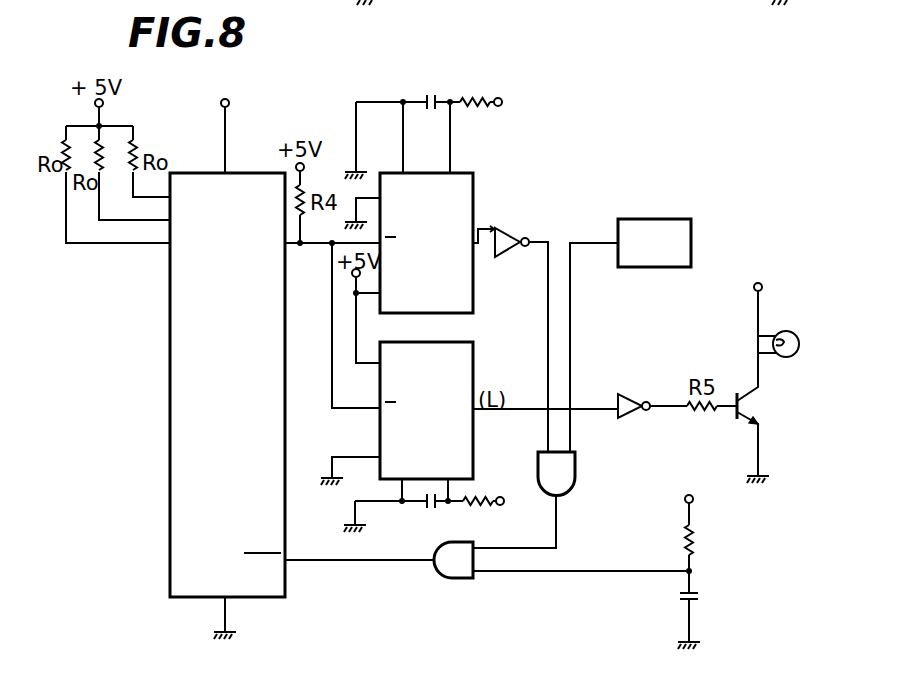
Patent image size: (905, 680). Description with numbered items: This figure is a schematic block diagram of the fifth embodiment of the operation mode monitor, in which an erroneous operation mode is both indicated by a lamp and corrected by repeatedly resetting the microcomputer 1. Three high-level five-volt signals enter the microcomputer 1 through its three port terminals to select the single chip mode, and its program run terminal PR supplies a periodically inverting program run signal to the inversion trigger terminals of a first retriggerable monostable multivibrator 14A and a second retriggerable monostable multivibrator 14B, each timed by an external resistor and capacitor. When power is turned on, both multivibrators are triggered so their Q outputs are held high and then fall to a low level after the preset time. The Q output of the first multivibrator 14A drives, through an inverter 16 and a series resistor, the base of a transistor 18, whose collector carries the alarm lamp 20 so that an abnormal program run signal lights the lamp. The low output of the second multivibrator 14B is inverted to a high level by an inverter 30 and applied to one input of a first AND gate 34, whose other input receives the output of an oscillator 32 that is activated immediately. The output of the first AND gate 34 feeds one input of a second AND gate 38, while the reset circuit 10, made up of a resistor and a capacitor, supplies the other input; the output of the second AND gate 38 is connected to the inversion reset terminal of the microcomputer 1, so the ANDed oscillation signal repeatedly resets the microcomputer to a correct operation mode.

The microcomputer 1 is at (256, 172).
The reset circuit 10 is at (672, 582).
The first retriggerable monostable multivibrator 14A is at (473, 358).
The second retriggerable monostable multivibrator 14B is at (473, 188).
The inverter 16 is at (629, 394).
The transistor 18 is at (760, 401).
The alarm lamp 20 is at (791, 331).
The inverter 30 is at (510, 258).
The oscillator 32 is at (675, 219).
The first AND gate 34 is at (577, 474).
The second AND gate 38 is at (457, 580).